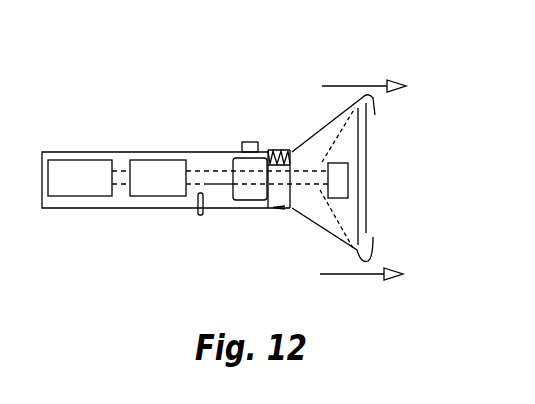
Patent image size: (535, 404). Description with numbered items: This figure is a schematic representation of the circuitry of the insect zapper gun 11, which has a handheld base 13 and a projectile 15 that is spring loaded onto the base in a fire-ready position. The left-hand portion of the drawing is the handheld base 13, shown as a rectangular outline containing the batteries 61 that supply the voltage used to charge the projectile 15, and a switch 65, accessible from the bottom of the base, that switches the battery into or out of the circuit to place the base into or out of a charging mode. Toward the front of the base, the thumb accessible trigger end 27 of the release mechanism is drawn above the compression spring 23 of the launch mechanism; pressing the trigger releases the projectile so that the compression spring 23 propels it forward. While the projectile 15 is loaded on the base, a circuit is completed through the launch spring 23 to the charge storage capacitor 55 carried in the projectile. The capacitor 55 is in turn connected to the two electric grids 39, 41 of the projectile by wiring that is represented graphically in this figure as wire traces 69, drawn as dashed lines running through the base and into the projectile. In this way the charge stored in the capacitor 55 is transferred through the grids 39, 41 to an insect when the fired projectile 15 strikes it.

The insect zapper gun 11 is at (112, 86).
The handheld base 13 is at (174, 149).
The projectile 15 is at (388, 133).
The compression spring 23 is at (267, 148).
The trigger end 27 is at (247, 144).
The electric grid 39 is at (368, 234).
The electric grid 41 is at (369, 217).
The charge storage capacitor 55 is at (348, 177).
The batteries 61 is at (73, 194).
The switch 65 is at (195, 212).
The wire traces 69 is at (120, 186).